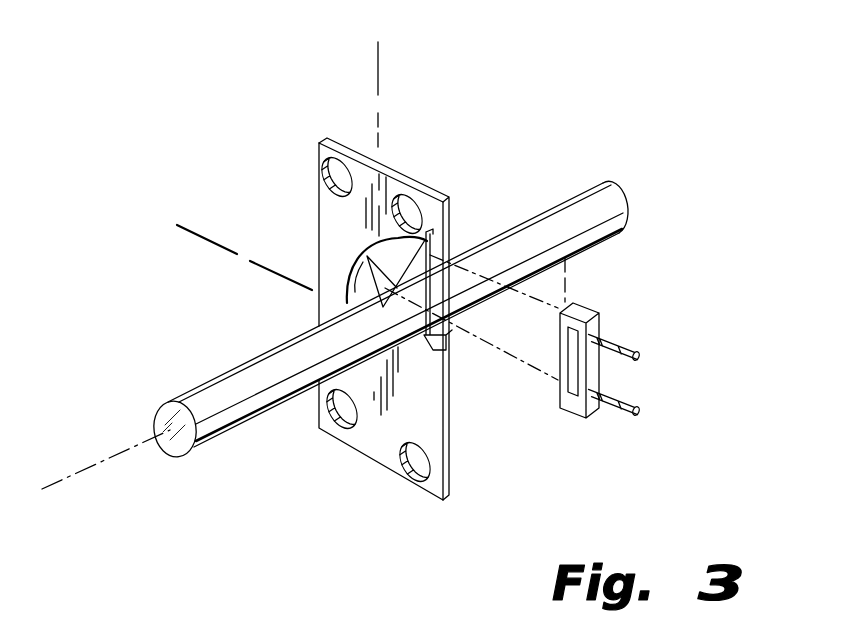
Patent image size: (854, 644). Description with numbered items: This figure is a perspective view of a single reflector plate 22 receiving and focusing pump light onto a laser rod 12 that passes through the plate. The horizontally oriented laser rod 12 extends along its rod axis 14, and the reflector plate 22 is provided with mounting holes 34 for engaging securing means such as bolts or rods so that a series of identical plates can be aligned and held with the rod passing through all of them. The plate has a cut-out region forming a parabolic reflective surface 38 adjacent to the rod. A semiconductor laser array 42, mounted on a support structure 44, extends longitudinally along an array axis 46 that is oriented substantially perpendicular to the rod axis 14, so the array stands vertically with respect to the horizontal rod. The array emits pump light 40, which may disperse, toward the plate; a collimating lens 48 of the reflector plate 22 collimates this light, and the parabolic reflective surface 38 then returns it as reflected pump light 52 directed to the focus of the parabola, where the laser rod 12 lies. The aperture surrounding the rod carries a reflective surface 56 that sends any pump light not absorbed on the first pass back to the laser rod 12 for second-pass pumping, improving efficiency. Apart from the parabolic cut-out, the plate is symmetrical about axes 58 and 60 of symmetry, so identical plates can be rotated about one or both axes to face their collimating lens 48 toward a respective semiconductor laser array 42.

The laser rod 12 is at (157, 420).
The rod axis 14 is at (63, 468).
The reflector plate 22 is at (370, 472).
The mounting hole 34 is at (336, 424).
The parabolic reflective surface 38 is at (348, 282).
The pump light 40 is at (521, 384).
The semiconductor laser array 42 is at (589, 445).
The support structure 44 is at (639, 413).
The array axis 46 is at (575, 287).
The collimating lens 48 is at (457, 241).
The reflected pump light 52 is at (400, 266).
The reflective surface 56 is at (398, 334).
The axis of symmetry 58 is at (184, 226).
The axis of symmetry 60 is at (374, 80).